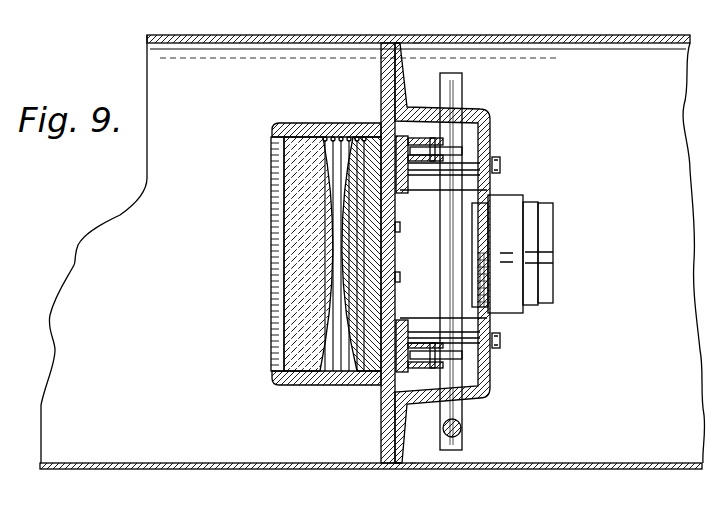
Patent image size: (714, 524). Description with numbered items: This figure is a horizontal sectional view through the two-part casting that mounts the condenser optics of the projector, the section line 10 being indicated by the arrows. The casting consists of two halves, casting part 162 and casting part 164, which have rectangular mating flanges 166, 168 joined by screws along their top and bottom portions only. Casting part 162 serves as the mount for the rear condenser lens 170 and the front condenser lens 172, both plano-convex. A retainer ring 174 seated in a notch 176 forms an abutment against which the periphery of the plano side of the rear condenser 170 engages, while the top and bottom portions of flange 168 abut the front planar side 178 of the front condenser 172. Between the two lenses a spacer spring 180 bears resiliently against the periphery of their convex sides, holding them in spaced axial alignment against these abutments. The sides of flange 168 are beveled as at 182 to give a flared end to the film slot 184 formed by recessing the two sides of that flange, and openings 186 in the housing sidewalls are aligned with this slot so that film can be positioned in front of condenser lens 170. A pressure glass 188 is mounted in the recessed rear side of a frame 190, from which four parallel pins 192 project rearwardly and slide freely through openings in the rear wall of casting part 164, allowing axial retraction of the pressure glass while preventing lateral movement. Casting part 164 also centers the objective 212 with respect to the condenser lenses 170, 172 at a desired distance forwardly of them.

The section line 10- 10 is at (536, 22).
The casting part 162 is at (298, 122).
The casting part 164 is at (481, 112).
The mating flange 166 is at (380, 80).
The mating flange 168 is at (405, 100).
The rear condenser lens 170 is at (300, 267).
The front condenser lens 172 is at (362, 373).
The retainer ring 174 is at (280, 184).
The notch 176 is at (274, 140).
The front planar side 178 is at (397, 228).
The spacer spring 180 is at (350, 137).
The bevel 182 is at (381, 53).
The film slot 184 is at (403, 108).
The opening 186 is at (416, 42).
The pressure glass 188 is at (397, 277).
The frame 190 is at (488, 191).
The pin 192 is at (467, 165).
The objective 212 is at (525, 202).